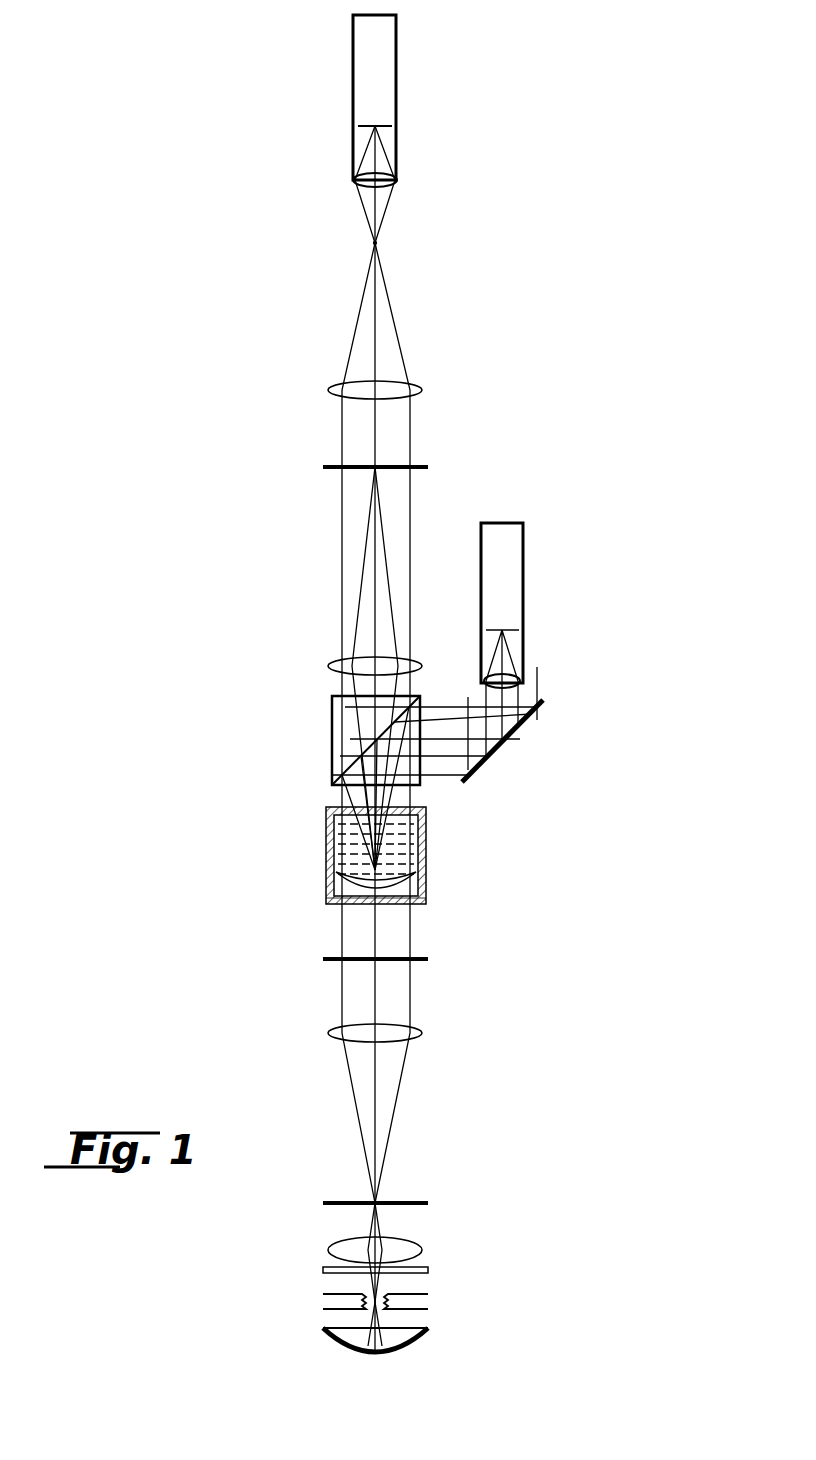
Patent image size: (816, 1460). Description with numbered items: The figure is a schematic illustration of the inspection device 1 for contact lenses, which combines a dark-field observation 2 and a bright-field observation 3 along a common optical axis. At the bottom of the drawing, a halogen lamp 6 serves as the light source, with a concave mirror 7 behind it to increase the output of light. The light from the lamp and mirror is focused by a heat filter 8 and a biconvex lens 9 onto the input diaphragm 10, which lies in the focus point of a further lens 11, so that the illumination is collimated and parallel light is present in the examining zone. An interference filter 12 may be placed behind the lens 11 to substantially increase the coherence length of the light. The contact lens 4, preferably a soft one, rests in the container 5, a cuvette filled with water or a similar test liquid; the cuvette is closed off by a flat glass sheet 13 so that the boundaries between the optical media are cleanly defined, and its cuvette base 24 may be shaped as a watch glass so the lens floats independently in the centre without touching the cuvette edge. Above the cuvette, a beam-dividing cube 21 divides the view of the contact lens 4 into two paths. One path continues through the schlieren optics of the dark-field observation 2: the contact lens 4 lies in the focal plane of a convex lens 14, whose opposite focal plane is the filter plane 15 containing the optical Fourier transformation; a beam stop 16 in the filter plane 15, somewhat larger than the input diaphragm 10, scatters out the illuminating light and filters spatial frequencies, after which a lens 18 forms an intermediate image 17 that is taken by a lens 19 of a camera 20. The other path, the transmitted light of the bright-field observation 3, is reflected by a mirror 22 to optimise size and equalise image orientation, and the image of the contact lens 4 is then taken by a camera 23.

The inspection device 1 is at (640, 497).
The dark-field observation 2 is at (474, 386).
The bright-field observation 3 is at (566, 659).
The contact lens 4 is at (360, 888).
The container 5 is at (427, 857).
The halogen lamp 6 is at (430, 1304).
The concave mirror 7 is at (400, 1337).
The heat filter 8 is at (430, 1270).
The biconvex lens 9 is at (400, 1250).
The input diaphragm 10 is at (418, 1203).
The lens 11 is at (420, 1033).
The interference filter 12 is at (418, 960).
The flat glass sheet 13 is at (337, 809).
The convex lens 14 is at (334, 663).
The filter plane 15 is at (420, 466).
The beam stop 16 is at (372, 466).
The intermediate image 17 is at (380, 248).
The lens 18 is at (334, 386).
The lens 19 is at (390, 183).
The camera 20 is at (388, 78).
The beam-dividing cube 21 is at (336, 733).
The mirror 22 is at (505, 750).
The camera 23 is at (507, 570).
The cuvette base 24 is at (418, 904).